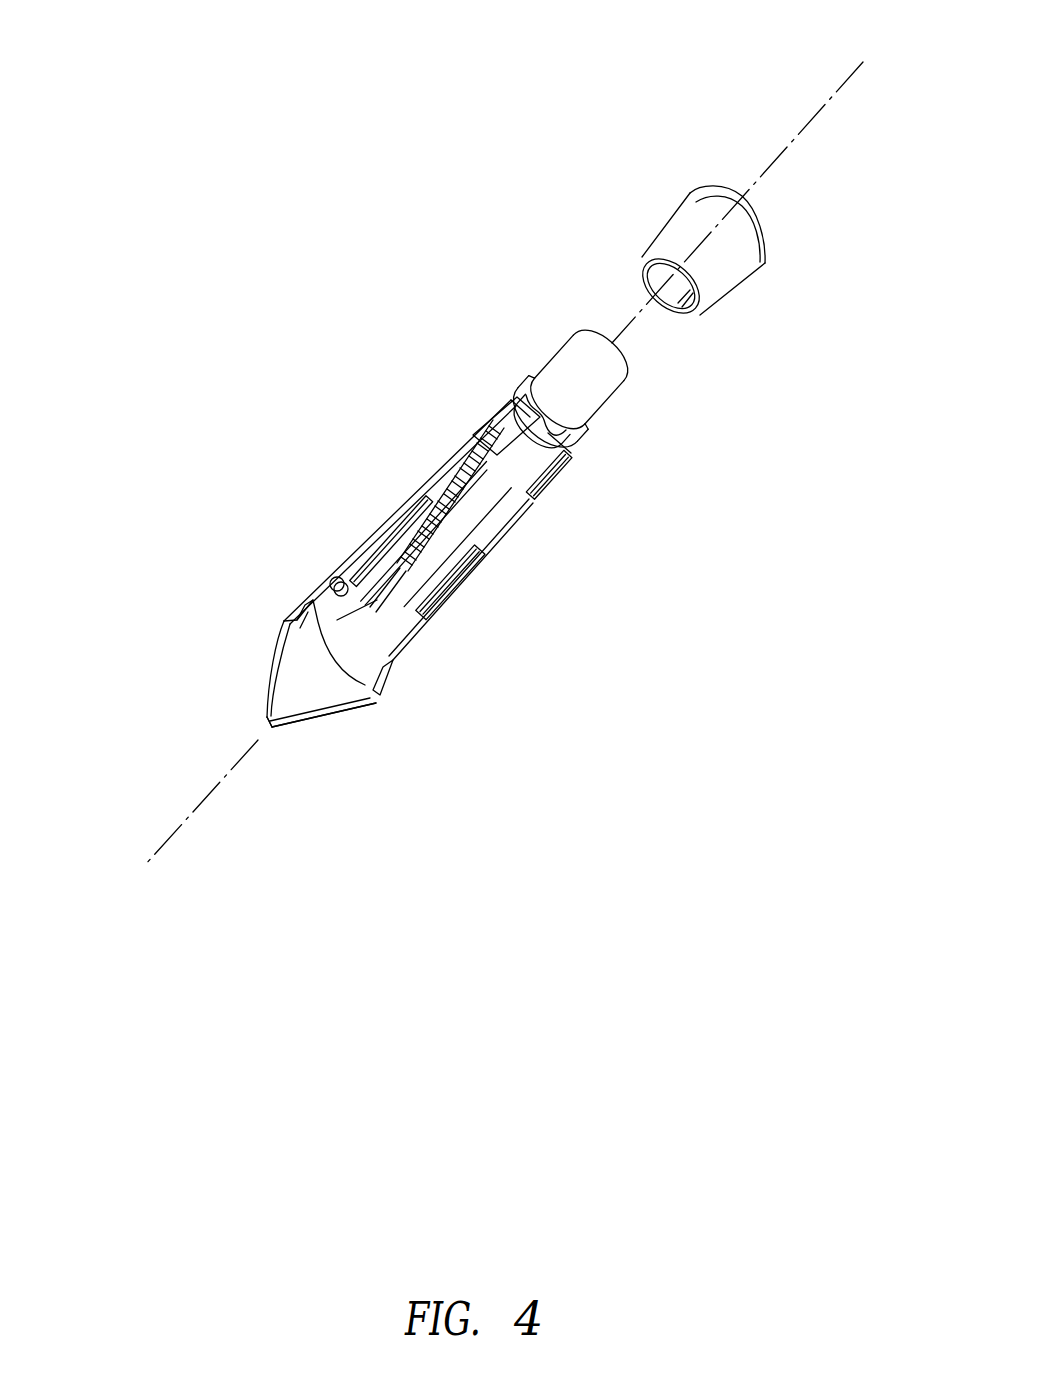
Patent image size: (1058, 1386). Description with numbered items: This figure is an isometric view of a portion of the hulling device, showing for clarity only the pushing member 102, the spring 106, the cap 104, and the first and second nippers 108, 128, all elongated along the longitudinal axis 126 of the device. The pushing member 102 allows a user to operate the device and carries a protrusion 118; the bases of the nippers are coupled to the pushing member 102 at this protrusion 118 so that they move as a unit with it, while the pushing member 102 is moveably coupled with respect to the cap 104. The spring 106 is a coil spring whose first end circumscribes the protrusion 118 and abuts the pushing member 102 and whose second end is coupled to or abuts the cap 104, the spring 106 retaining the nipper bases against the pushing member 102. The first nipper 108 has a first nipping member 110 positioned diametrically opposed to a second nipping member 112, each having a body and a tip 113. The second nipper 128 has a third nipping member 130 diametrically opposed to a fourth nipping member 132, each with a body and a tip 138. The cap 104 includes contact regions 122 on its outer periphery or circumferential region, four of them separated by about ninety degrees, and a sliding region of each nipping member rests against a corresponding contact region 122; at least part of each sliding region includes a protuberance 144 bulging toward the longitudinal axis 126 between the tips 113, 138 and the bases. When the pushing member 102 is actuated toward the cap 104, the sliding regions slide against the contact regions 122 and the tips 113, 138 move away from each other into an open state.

The pushing member 102 is at (728, 292).
The cap 104 is at (387, 670).
The spring 106 is at (460, 480).
The first nipper 108 is at (422, 470).
The first nipping member 110 is at (437, 455).
The second nipping member 112 is at (533, 513).
The tip 113 is at (262, 720).
The protrusion 118 is at (500, 483).
The contact region 122 is at (298, 616).
The longitudinal axis 126 is at (833, 88).
The second nipper 128 is at (490, 523).
The third nipping member 130 is at (413, 573).
The fourth nipping member 132 is at (385, 582).
The tip 138 is at (270, 735).
The protuberance 144 is at (372, 598).